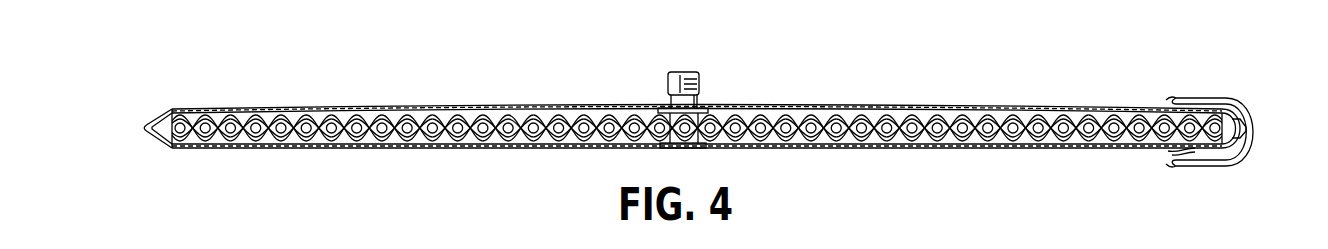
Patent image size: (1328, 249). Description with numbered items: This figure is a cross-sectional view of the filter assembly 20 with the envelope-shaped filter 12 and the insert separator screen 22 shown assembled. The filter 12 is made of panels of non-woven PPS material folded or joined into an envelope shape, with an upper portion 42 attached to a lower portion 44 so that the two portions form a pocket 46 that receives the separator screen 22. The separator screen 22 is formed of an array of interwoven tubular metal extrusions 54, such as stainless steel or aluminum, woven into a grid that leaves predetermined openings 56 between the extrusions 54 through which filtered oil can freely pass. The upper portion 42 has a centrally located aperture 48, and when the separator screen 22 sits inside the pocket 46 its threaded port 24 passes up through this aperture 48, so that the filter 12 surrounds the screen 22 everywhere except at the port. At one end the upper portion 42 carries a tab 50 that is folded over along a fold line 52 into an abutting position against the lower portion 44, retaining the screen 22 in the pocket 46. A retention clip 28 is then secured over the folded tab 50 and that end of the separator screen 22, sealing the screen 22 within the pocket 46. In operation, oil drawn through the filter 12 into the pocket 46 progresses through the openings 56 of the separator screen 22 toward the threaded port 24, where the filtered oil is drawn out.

The envelope-shaped filter 12 is at (791, 99).
The filter assembly 20 is at (166, 79).
The separator screen 22 is at (165, 129).
The threaded port 24 is at (672, 75).
The retention clip 28 is at (1232, 102).
The upper portion 42 is at (990, 108).
The lower portion 44 is at (989, 150).
The pocket 46 is at (573, 117).
The aperture 48 is at (700, 103).
The tab 50 is at (1208, 146).
The fold line 52 is at (1245, 128).
The tubular metal extrusions 54 is at (482, 120).
The openings 56 is at (370, 118).